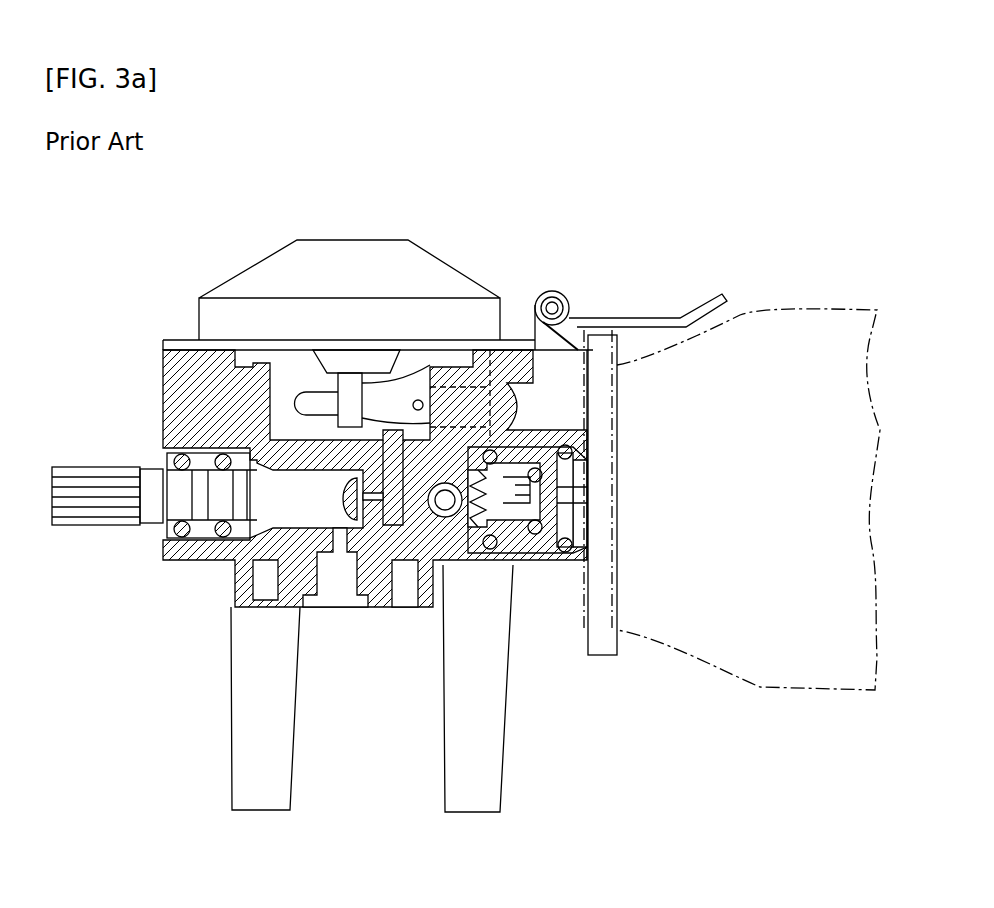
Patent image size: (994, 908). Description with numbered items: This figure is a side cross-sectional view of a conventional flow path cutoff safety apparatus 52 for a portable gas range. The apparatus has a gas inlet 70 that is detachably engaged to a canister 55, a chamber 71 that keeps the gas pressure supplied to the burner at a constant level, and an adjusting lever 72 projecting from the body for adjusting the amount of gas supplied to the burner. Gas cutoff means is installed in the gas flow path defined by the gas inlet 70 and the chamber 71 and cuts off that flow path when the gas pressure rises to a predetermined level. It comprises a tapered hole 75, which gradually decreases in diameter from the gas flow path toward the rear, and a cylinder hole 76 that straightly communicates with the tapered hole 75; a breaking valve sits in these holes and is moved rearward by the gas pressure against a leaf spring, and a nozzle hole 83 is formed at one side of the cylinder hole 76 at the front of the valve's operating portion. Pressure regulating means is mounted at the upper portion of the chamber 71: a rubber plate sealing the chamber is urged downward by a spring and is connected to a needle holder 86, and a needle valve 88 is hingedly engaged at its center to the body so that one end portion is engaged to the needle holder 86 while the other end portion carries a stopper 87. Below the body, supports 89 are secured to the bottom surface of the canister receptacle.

The brake master cylinder assembly (prior art) 52 is at (136, 300).
The canister 55 is at (838, 302).
The gas inlet 70 is at (553, 553).
The chamber 71 is at (293, 376).
The adjusting lever 72 is at (97, 475).
The tapered hole 75 is at (446, 508).
The cylinder hole 76 is at (413, 528).
The nozzle hole 83 is at (513, 375).
The needle holder 86 is at (380, 382).
The stopper 87 is at (481, 372).
The needle valve 88 is at (310, 397).
The support 89 is at (243, 700).